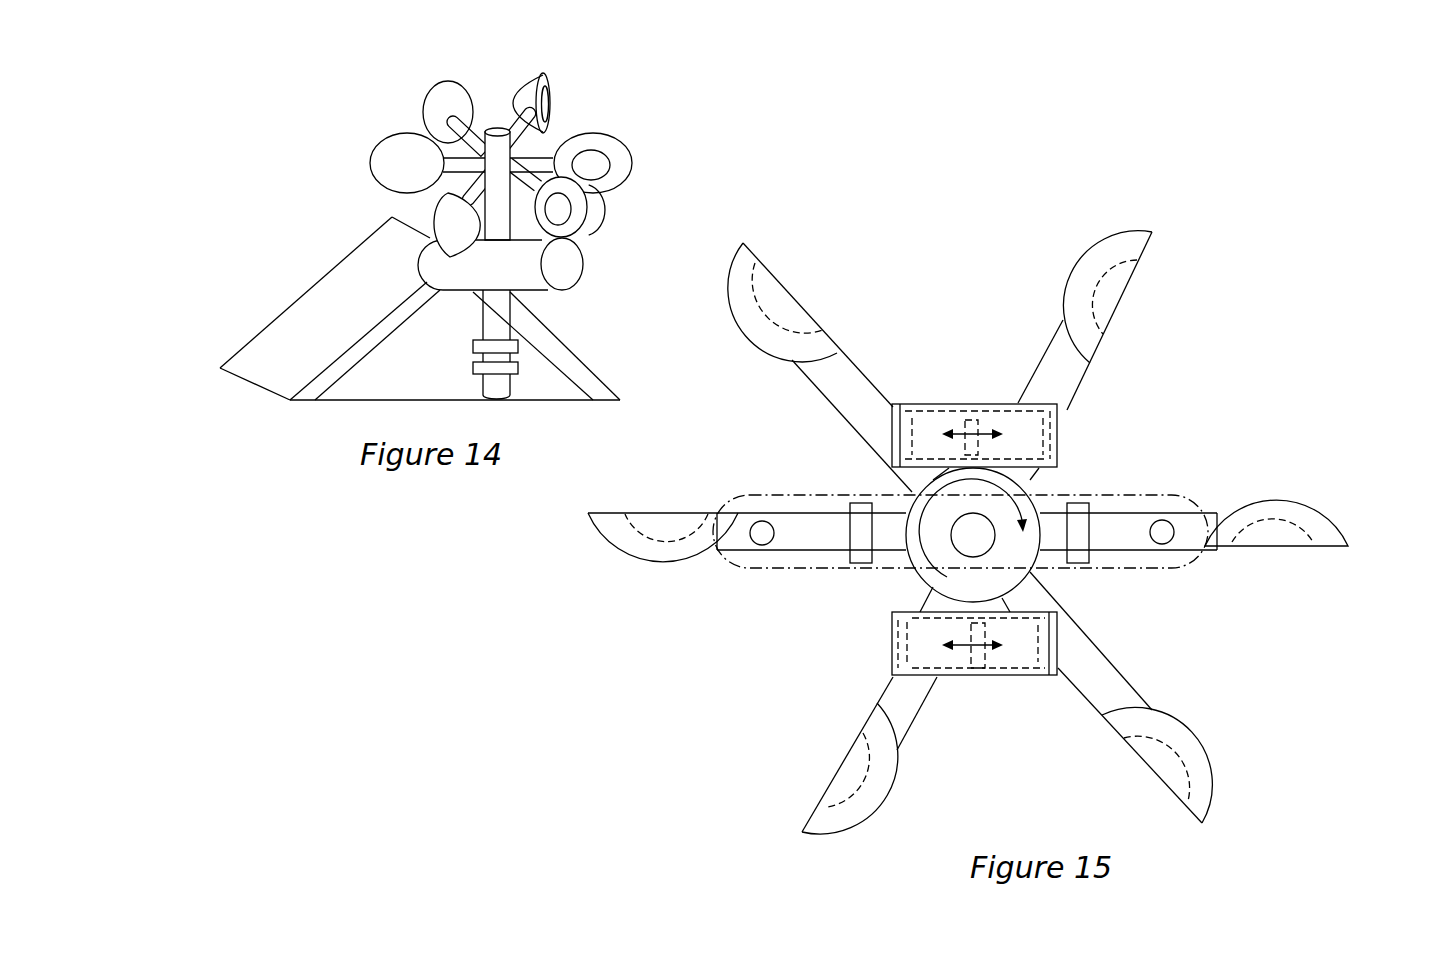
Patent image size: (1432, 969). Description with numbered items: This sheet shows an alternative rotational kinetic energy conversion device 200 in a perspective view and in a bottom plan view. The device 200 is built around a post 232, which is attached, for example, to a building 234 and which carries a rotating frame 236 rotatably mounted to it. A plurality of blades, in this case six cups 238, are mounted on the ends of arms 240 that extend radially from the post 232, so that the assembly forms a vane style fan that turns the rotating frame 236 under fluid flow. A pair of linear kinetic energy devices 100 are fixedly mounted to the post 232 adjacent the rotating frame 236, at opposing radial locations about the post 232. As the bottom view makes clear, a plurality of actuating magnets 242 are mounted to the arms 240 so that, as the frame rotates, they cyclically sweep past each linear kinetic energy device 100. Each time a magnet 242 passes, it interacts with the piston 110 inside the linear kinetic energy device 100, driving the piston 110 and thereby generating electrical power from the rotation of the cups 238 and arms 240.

In FIG. 14, the linear kinetic energy device 100 is at (420, 259).
In FIG. 15, the linear kinetic energy device 100 is at (999, 400).
In FIG. 15, the piston 110 is at (972, 404).
In FIG. 14, the rotational kinetic energy conversion device 200 is at (754, 62).
In FIG. 15, the rotational kinetic energy conversion device 200 is at (1215, 245).
In FIG. 14, the post 232 is at (502, 378).
In FIG. 14, the building 234 is at (296, 347).
In FIG. 14, the rotating frame 236 is at (453, 155).
In FIG. 15, the rotating frame 236 is at (1072, 625).
In FIG. 14, the cups 238 is at (443, 93).
In FIG. 15, the cups 238 is at (1092, 253).
In FIG. 14, the arms 240 is at (533, 161).
In FIG. 15, the arms 240 is at (1053, 370).
In FIG. 15, the actuating magnets 242 is at (1080, 502).